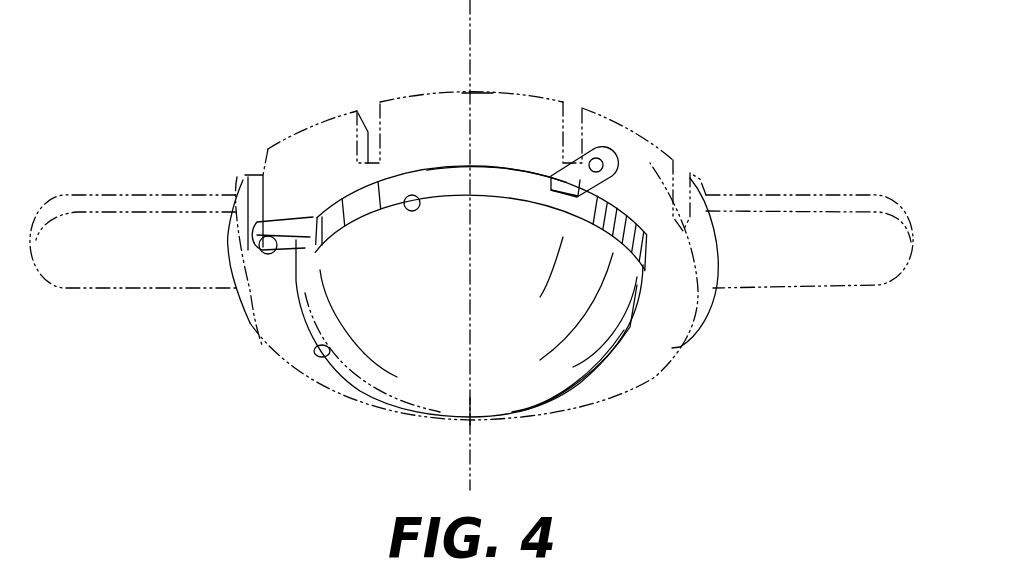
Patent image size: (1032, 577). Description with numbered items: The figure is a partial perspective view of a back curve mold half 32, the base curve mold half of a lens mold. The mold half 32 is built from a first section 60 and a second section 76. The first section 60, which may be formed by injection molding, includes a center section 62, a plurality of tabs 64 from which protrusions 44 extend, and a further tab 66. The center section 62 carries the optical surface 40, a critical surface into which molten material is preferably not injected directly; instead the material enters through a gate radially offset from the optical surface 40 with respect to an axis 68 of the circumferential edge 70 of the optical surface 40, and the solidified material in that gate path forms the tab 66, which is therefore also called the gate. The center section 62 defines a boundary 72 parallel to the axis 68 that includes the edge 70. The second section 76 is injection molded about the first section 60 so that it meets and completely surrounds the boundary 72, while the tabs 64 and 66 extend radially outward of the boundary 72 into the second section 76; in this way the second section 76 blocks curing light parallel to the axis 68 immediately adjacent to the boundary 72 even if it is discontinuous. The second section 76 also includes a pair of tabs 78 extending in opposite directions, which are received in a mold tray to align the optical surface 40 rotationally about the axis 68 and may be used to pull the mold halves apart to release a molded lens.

The back curve mold half 32 is at (751, 137).
The optical surface 40 is at (387, 403).
The protrusions 44 is at (233, 277).
The first section 60 is at (597, 377).
The center section 62 is at (644, 222).
The tabs 64 is at (288, 213).
The tab 66 is at (314, 353).
The axis 68 is at (470, 3).
The circumferential edge 70 is at (412, 195).
The boundary 72 is at (483, 180).
The second section 76 is at (677, 349).
The tabs 78 is at (147, 195).